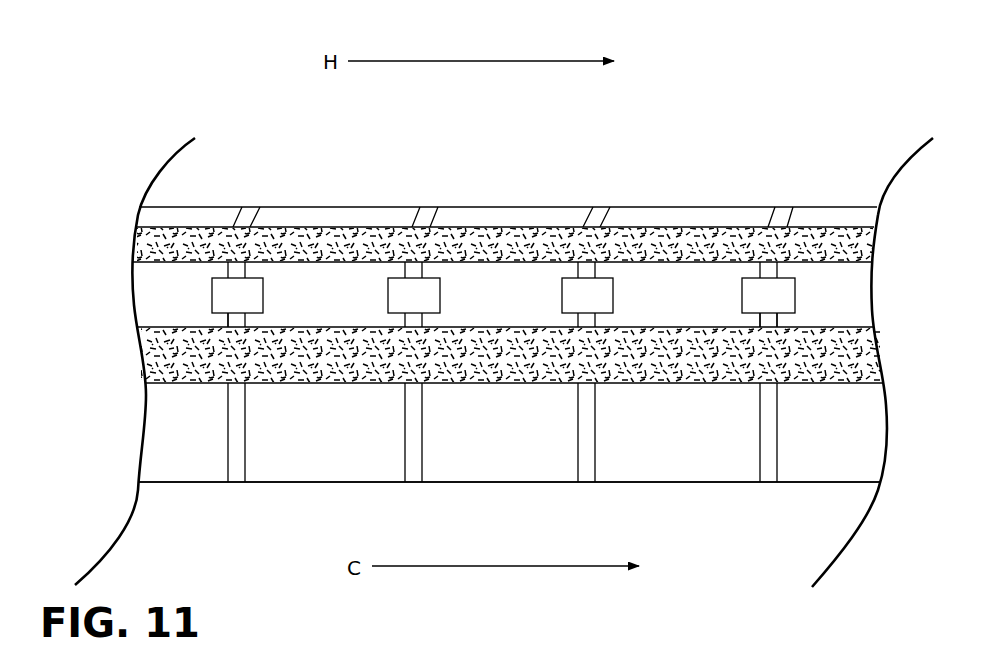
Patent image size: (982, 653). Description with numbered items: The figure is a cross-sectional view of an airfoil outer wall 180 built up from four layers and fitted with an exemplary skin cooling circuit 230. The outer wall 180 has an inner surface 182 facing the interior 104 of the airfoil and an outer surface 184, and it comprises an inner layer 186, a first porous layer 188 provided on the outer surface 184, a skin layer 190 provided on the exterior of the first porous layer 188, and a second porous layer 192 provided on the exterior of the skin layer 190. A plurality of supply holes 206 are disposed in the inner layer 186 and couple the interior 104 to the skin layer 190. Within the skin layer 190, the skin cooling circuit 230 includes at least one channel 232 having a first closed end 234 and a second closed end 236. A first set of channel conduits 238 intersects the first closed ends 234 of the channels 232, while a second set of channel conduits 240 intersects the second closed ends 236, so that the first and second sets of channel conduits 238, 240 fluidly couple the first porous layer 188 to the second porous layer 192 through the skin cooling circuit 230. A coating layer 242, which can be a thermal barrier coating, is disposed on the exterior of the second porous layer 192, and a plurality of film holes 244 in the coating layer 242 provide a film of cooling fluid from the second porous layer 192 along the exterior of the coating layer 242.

The outer wall 180 is at (226, 86).
The inner surface 182 is at (175, 483).
The outer surface 184 is at (180, 387).
The inner layer 186 is at (893, 435).
The first porous layer 188 is at (882, 335).
The skin layer 190 is at (877, 296).
The second porous layer 192 is at (877, 250).
The supply holes 206 is at (245, 443).
The interior 104 is at (512, 541).
The skin cooling circuit 230 is at (466, 211).
The channel 232 is at (269, 292).
The first closed end 234 is at (221, 313).
The second closed end 236 is at (217, 277).
The first set of channel conduits 238 is at (246, 322).
The second set of channel conduits 240 is at (622, 226).
The coating layer 242 is at (818, 207).
The film holes 244 is at (232, 207).